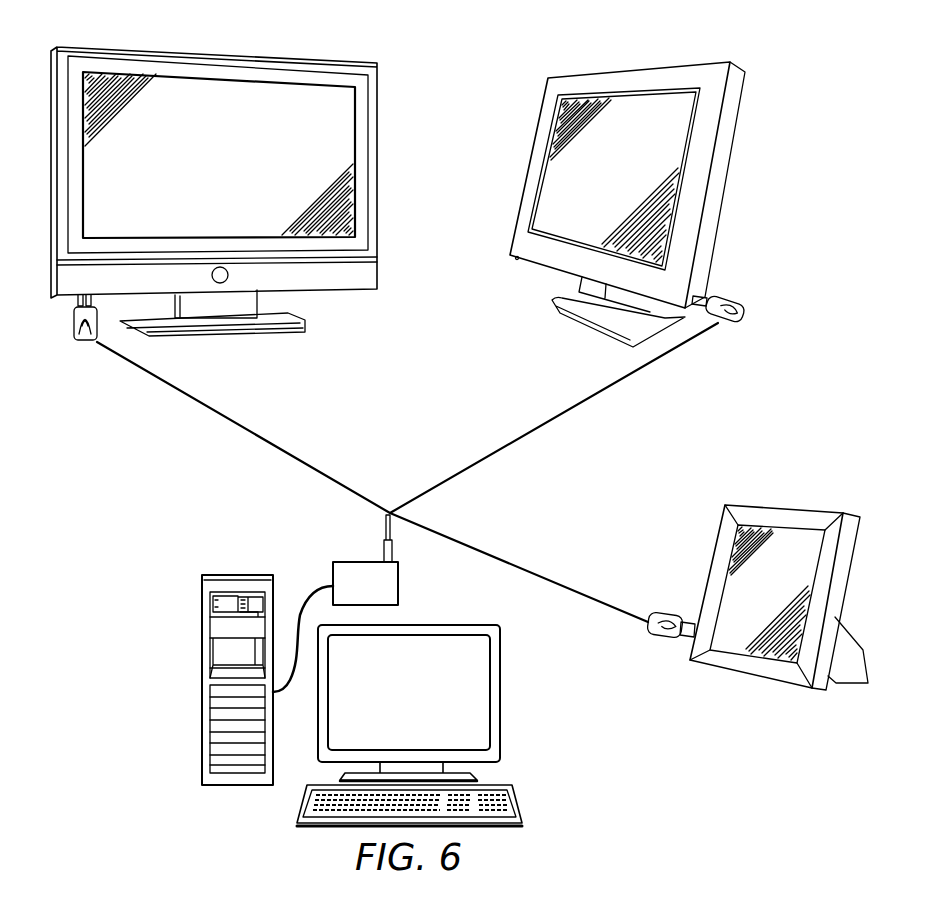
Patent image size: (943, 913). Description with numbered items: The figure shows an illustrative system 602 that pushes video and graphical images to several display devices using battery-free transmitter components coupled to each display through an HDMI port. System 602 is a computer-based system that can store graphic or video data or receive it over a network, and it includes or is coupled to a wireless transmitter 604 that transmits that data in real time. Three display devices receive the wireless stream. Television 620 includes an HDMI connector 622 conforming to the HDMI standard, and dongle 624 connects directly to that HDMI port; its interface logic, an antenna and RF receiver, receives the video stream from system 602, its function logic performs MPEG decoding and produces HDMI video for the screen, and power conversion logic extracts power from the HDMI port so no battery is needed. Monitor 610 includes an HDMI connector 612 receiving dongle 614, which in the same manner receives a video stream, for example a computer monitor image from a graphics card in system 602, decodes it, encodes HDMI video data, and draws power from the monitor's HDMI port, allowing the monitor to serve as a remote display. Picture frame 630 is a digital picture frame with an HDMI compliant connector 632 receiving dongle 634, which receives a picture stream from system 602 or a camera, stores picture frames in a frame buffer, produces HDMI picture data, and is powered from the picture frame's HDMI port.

The system 602 is at (202, 683).
The wireless transmitter 604 is at (333, 578).
The monitor 610 is at (640, 68).
The HDMI connector 612 is at (700, 282).
The dongle 614 is at (745, 313).
The television 620 is at (378, 175).
The HDMI connector 622 is at (72, 300).
The dongle 624 is at (85, 342).
The picture frame 630 is at (788, 507).
The HDMI compliant connector 632 is at (685, 640).
The dongle 634 is at (672, 615).